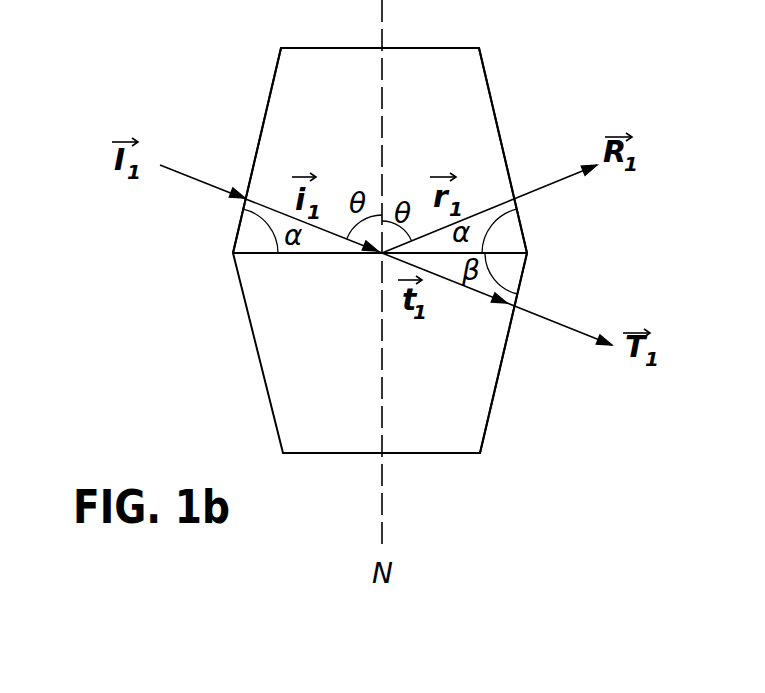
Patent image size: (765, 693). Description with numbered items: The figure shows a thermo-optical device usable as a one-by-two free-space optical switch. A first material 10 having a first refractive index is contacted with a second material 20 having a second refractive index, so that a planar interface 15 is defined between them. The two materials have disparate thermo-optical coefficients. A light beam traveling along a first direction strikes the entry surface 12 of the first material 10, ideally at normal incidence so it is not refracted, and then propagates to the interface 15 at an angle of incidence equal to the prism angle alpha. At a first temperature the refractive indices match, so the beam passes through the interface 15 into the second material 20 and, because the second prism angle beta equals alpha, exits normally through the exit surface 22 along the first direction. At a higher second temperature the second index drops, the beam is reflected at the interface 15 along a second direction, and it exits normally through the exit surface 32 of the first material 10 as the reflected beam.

The first material 10 is at (470, 75).
The entry surface 12 is at (267, 113).
The exit surface of the first material 32 is at (503, 116).
The interface 15 is at (233, 253).
The exit surface of the second material 22 is at (502, 373).
The second material 20 is at (427, 433).